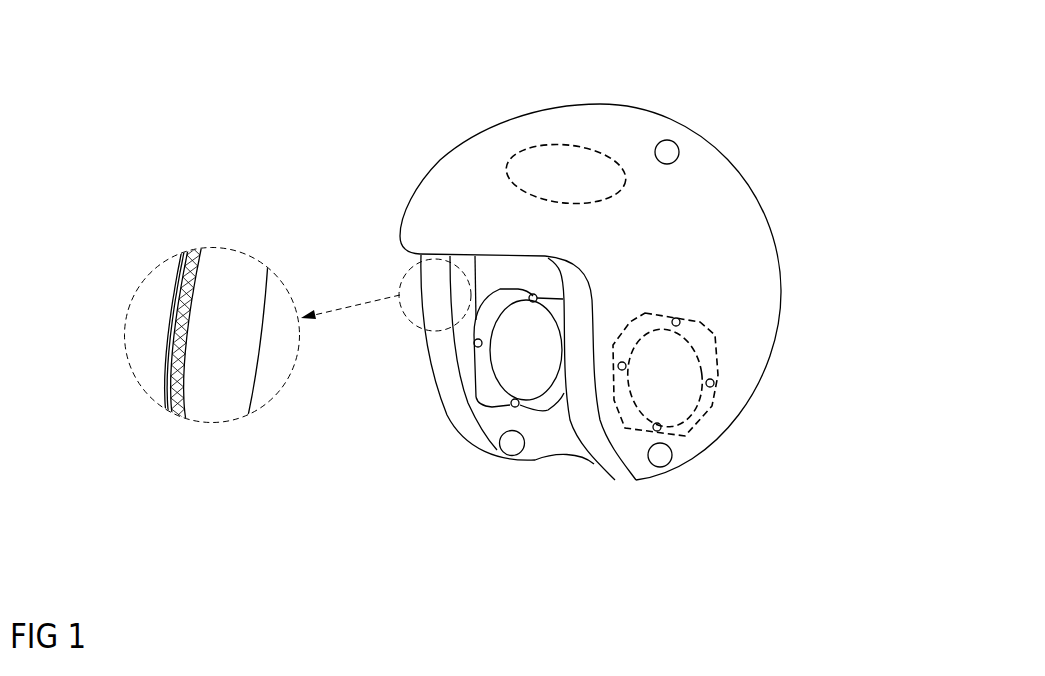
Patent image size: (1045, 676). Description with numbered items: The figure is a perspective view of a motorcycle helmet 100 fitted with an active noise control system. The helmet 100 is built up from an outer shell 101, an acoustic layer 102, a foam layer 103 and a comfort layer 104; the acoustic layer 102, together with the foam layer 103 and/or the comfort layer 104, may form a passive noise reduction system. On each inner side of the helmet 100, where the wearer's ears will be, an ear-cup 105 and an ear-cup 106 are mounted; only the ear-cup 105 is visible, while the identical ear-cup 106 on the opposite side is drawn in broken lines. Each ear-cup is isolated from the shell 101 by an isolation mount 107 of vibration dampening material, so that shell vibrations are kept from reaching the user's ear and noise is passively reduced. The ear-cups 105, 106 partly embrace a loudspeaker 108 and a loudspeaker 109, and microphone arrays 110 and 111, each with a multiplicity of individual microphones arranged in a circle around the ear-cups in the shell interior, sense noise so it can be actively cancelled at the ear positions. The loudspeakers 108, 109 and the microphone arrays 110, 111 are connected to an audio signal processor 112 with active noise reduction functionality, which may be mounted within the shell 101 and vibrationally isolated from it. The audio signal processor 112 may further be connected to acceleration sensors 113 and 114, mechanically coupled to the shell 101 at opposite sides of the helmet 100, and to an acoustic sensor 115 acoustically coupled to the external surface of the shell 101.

The motorcycle helmet 100 is at (763, 107).
The outer shell 101 is at (727, 212).
The acoustic layer 102 is at (178, 363).
The foam layer 103 is at (225, 291).
The comfort layer 104 is at (267, 288).
The ear-cup 105 is at (424, 358).
The ear-cup 106 is at (702, 406).
The isolation mount 107 is at (474, 333).
The loudspeaker 108 is at (505, 376).
The loudspeaker 109 is at (724, 367).
The microphone array 110 is at (530, 296).
The microphone array 111 is at (622, 362).
The audio signal processor 112 is at (573, 164).
The acceleration sensor 113 is at (504, 456).
The acceleration sensor 114 is at (672, 455).
The acoustic sensor 115 is at (677, 141).